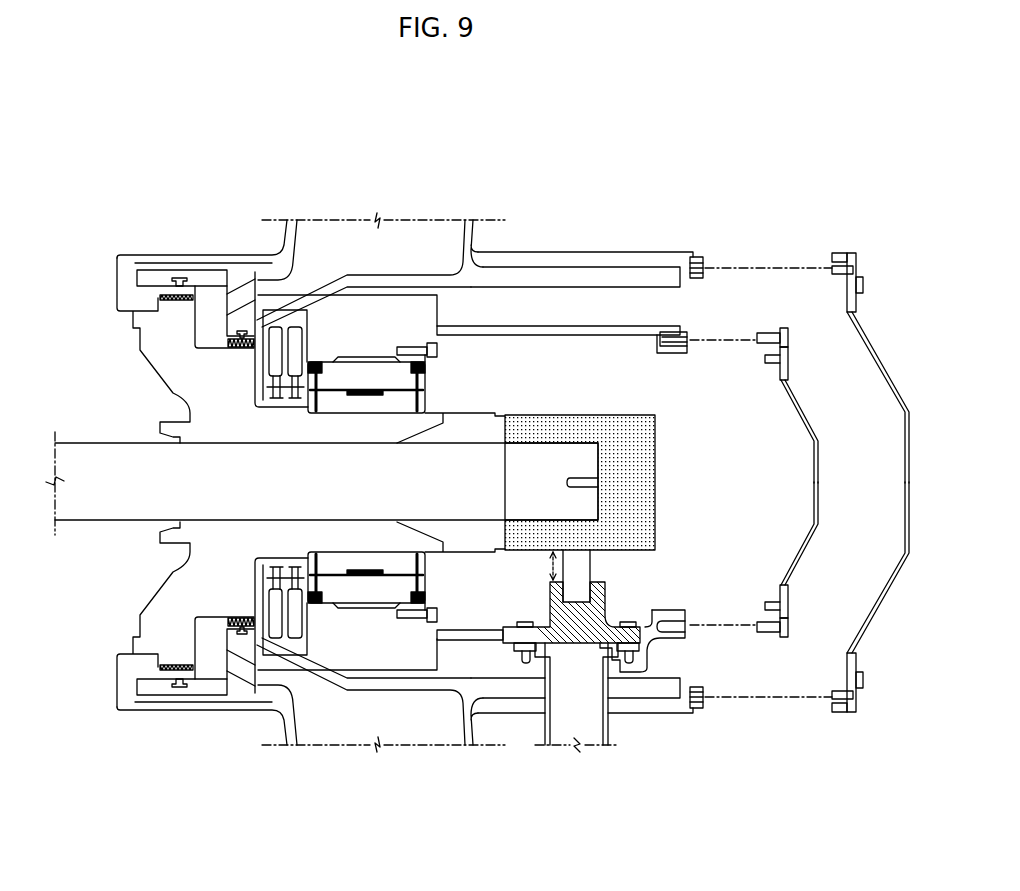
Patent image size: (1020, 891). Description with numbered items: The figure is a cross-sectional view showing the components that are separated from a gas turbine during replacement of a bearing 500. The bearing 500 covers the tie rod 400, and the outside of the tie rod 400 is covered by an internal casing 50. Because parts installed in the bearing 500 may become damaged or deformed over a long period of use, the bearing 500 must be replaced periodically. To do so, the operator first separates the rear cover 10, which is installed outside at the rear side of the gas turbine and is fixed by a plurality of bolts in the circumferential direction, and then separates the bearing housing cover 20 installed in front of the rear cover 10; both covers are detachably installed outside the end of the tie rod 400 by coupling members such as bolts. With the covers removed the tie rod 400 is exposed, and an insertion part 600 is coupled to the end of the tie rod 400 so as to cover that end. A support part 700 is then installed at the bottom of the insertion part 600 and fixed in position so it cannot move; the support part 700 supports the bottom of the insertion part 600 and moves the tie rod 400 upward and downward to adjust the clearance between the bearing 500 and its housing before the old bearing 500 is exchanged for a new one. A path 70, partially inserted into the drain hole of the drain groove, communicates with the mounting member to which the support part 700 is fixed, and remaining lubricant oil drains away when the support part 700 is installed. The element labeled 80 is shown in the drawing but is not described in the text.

The rear cover 10 is at (904, 480).
The bearing housing cover 20 is at (795, 553).
The internal casing 50 is at (556, 327).
The path 70 is at (587, 713).
The sleeve 80 is at (485, 428).
The tie rod 400 is at (101, 442).
The bearing 500 is at (440, 372).
The insertion part 600 is at (657, 431).
The support part 700 is at (612, 592).